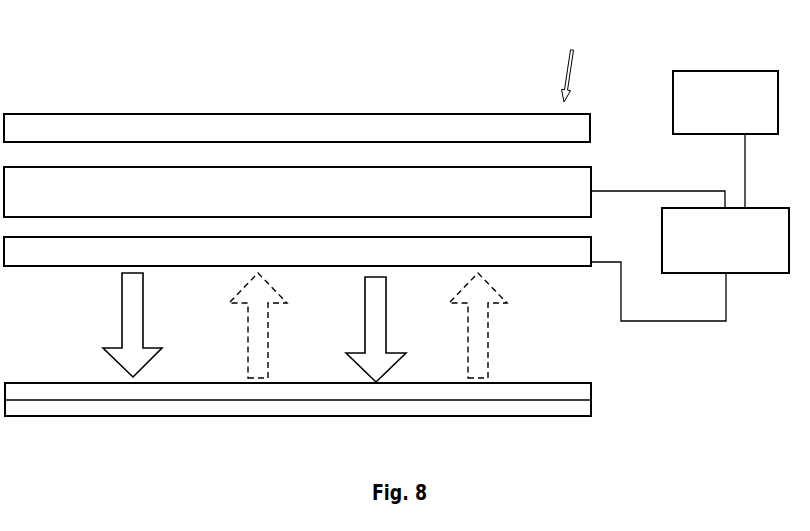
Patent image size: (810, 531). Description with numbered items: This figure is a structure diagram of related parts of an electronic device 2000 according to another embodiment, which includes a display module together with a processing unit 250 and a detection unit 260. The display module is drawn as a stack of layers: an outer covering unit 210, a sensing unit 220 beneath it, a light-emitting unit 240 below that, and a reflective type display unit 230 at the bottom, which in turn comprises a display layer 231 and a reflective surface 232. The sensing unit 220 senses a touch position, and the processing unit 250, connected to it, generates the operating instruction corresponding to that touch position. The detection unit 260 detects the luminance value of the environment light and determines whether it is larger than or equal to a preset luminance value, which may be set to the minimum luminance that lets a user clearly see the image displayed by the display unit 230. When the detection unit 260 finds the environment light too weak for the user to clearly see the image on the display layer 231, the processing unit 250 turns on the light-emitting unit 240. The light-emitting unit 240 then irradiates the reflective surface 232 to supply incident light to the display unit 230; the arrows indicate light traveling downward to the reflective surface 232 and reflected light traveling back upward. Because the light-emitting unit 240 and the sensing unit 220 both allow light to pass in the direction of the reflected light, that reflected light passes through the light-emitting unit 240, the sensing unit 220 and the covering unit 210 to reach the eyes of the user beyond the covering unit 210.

The electronic device 2000 is at (570, 67).
The covering unit 210 is at (592, 126).
The sensing unit 220 is at (592, 184).
The light-emitting unit 240 is at (592, 248).
The reflective type display unit 230 is at (323, 379).
The display layer 231 is at (528, 394).
The reflective surface 232 is at (87, 400).
The processing unit 250 is at (749, 274).
The detection unit 260 is at (697, 71).